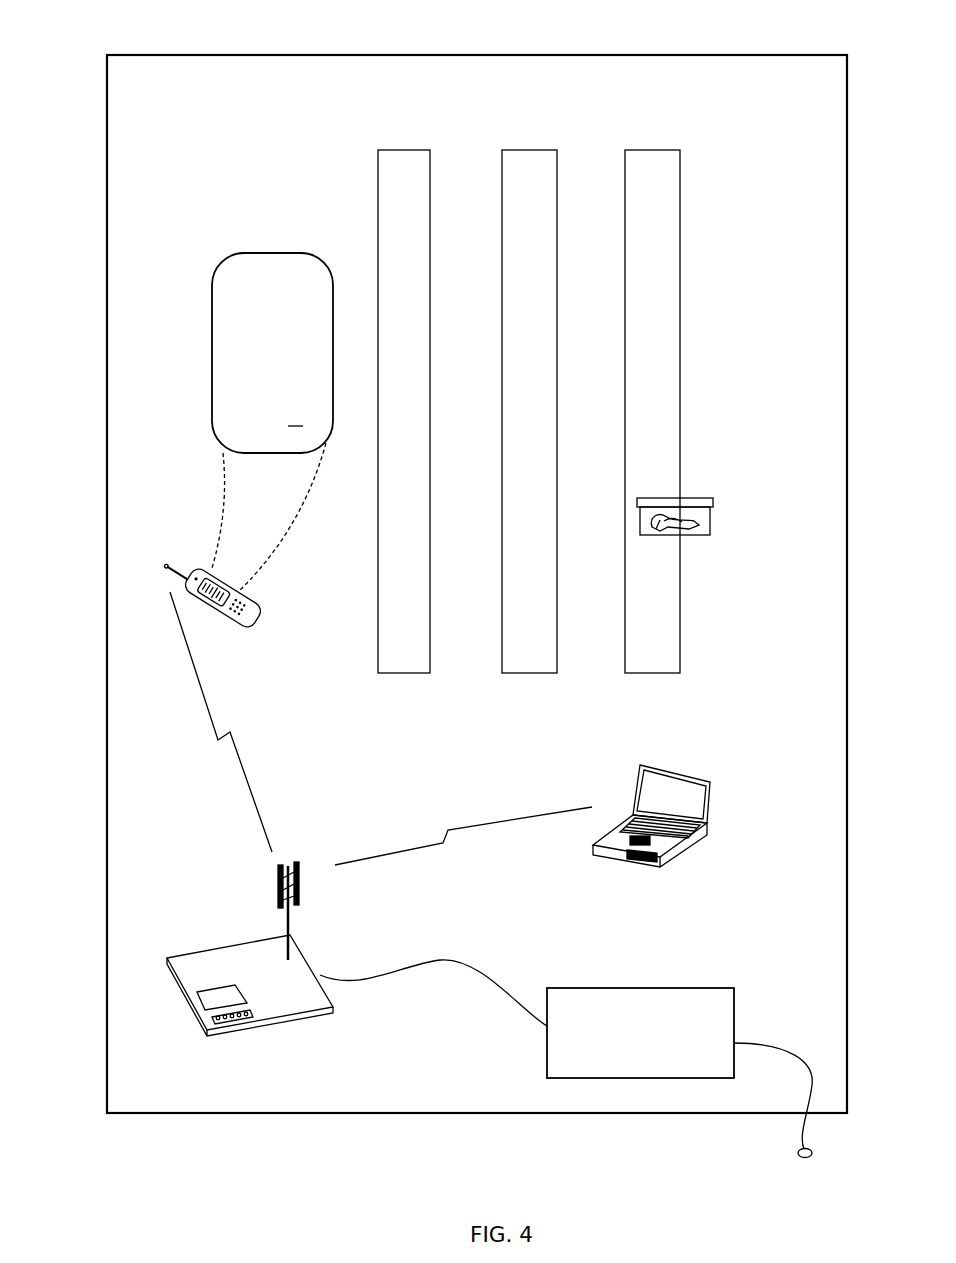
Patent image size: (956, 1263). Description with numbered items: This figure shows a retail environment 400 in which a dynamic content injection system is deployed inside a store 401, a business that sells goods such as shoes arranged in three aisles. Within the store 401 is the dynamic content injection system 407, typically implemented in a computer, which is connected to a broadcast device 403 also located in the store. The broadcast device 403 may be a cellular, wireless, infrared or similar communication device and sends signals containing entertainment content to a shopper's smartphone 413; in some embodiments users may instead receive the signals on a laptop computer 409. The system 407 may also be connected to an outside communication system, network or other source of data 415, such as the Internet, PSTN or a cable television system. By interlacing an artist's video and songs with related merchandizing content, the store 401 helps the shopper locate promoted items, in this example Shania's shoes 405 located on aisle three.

The retail store environment 400 is at (70, 1180).
The store 401 is at (690, 54).
The broadcast device 403 is at (210, 947).
The shoes 405 is at (708, 498).
The dynamic content injection system 407 is at (708, 987).
The laptop computer 409 is at (707, 820).
The smartphone 413 is at (250, 630).
The outside communication system, network or other source of data 415 is at (812, 1154).